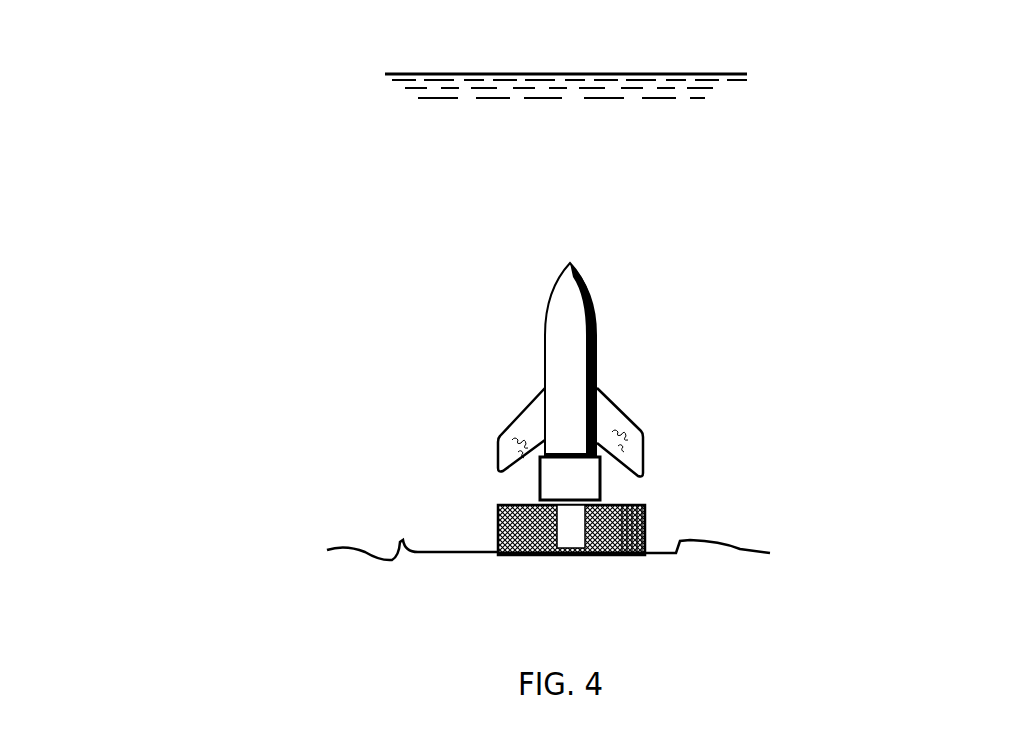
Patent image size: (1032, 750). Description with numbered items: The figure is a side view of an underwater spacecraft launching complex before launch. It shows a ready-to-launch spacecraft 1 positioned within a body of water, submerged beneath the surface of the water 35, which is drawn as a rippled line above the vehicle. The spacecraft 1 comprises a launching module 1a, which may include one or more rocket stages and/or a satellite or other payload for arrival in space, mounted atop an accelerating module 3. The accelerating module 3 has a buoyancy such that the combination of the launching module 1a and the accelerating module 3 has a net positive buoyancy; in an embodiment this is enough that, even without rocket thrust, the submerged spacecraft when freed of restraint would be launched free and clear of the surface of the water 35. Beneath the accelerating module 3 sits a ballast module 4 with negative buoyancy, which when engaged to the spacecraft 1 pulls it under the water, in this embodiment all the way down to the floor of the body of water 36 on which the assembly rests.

The spacecraft 1 is at (486, 276).
The launching module 1a is at (577, 355).
The accelerating module 3 is at (580, 477).
The ballast module 4 is at (497, 547).
The surface of the water 35 is at (703, 74).
The floor of the body of water 36 is at (430, 567).